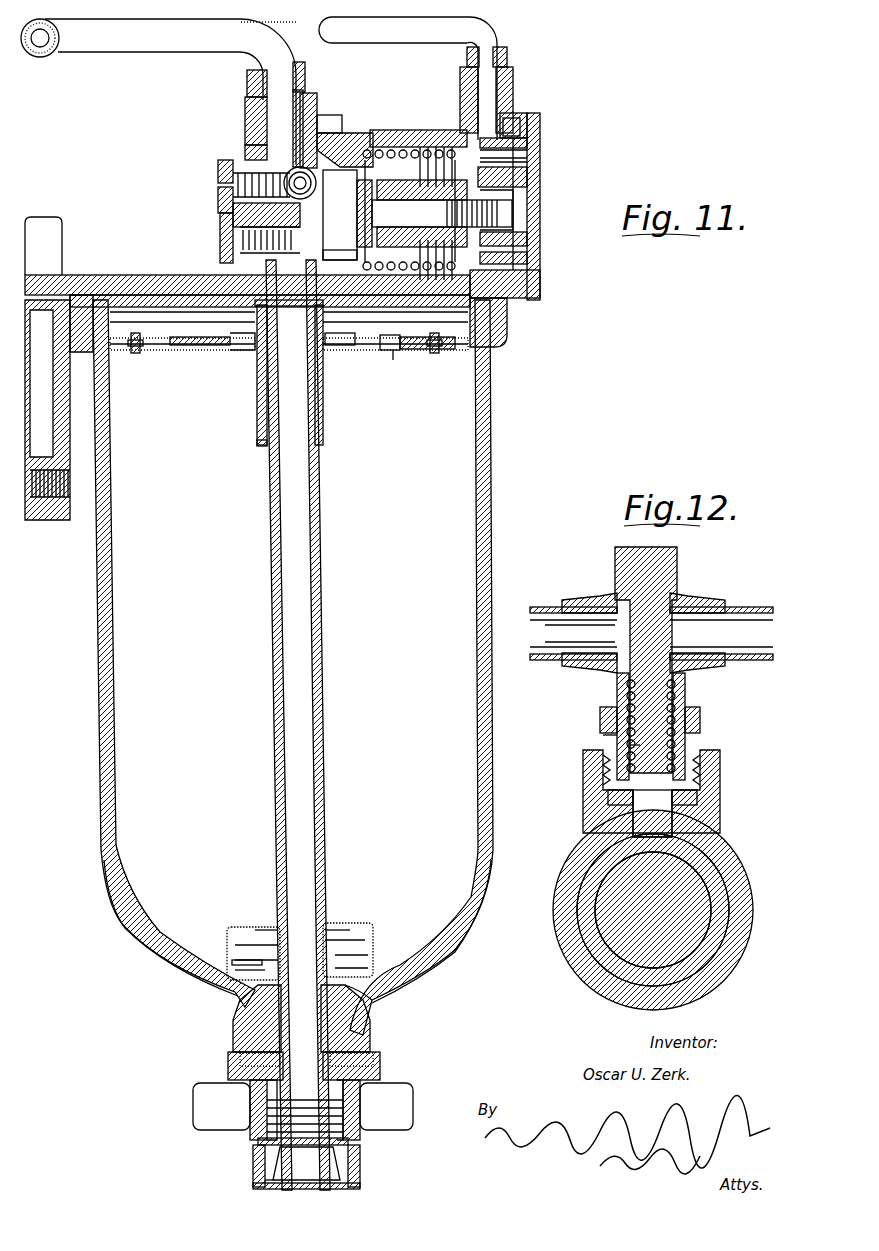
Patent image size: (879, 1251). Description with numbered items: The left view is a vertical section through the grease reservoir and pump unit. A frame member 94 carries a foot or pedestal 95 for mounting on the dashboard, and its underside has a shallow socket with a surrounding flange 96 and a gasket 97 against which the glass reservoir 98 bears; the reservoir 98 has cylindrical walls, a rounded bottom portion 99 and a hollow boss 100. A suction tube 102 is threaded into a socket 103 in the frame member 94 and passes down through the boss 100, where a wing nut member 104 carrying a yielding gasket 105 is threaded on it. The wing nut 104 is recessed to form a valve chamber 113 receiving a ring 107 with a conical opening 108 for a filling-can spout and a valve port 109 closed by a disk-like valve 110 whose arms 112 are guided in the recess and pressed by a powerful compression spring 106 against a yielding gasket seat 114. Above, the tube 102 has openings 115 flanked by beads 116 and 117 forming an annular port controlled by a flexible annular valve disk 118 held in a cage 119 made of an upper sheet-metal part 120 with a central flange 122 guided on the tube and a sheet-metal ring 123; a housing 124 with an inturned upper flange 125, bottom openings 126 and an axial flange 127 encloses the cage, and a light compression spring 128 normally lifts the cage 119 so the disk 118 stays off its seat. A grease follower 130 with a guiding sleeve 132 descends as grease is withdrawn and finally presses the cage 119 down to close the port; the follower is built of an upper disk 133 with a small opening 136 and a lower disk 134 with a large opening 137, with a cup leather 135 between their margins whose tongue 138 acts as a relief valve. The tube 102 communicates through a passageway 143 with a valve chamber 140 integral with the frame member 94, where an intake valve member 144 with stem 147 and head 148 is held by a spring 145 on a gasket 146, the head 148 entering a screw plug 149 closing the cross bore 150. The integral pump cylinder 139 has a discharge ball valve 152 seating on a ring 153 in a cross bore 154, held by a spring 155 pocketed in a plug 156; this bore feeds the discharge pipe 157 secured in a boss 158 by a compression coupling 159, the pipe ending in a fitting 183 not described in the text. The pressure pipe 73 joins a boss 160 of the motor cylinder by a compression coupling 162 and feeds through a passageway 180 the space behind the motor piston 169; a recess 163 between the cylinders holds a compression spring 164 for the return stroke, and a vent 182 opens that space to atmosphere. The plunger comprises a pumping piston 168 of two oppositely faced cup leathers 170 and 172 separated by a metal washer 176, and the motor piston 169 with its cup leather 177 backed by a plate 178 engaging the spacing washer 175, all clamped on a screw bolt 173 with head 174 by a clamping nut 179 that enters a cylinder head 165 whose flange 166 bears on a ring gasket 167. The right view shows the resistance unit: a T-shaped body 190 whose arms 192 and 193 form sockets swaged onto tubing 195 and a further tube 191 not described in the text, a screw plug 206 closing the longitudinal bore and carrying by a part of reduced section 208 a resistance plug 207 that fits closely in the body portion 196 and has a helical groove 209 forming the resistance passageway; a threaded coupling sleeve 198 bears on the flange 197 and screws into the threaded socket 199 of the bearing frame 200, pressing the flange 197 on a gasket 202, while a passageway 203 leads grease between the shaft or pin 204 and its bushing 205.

In FIG. 11, the eye ring 183 is at (70, 56).
In FIG. 11, the discharge pipe 157 is at (148, 48).
In FIG. 11, the boss 158 is at (250, 92).
In FIG. 11, the compression coupling 159 is at (294, 60).
In FIG. 11, the pressure pipe 73 is at (362, 30).
In FIG. 11, the compression coupling 162 is at (502, 50).
In FIG. 11, the boss 160 is at (515, 72).
In FIG. 11, the ring gasket 167 is at (520, 118).
In FIG. 11, the flange 166 is at (535, 120).
In FIG. 11, the passageway 180 is at (540, 140).
In FIG. 11, the cup leather 177 is at (540, 153).
In FIG. 11, the plate or washer 178 is at (545, 161).
In FIG. 11, the cylinder head 165 is at (540, 173).
In FIG. 11, the clamping nut 179 is at (540, 188).
In FIG. 11, the pumping piston 168 is at (540, 240).
In FIG. 11, the motor piston 169 is at (540, 264).
In FIG. 11, the gasket 97 is at (542, 287).
In FIG. 11, the flange 96 is at (509, 318).
In FIG. 11, the frame member 94 is at (118, 275).
In FIG. 11, the opening 136 is at (158, 290).
In FIG. 11, the foot or pedestal 95 is at (38, 230).
In FIG. 11, the glass reservoir 98 is at (95, 560).
In FIG. 11, the rounded bottom portion 99 is at (150, 945).
In FIG. 11, the openings 126 is at (430, 974).
In FIG. 11, the suction tube 102 is at (320, 586).
In FIG. 11, the cross bore 150 is at (262, 420).
In FIG. 11, the passageway 143 is at (262, 445).
In FIG. 11, the guiding sleeve 132 is at (258, 450).
In FIG. 11, the cup leather 135 is at (125, 355).
In FIG. 11, the tongue member 138 is at (155, 352).
In FIG. 11, the opening 137 is at (205, 352).
In FIG. 11, the socket 103 is at (235, 352).
In FIG. 11, the cup leather 170 is at (355, 350).
In FIG. 11, the cup leather 172 is at (400, 352).
In FIG. 11, the grease follower 130 is at (432, 360).
In FIG. 11, the metal washer 176 is at (386, 352).
In FIG. 11, the lower disk 134 is at (360, 350).
In FIG. 11, the upper disk 133 is at (394, 362).
In FIG. 11, the cross bore 154 is at (248, 122).
In FIG. 11, the valve chamber 140 is at (250, 150).
In FIG. 11, the plug 156 is at (220, 168).
In FIG. 11, the spring 155 is at (220, 196).
In FIG. 11, the stem 147 is at (232, 242).
In FIG. 11, the head 148 is at (222, 232).
In FIG. 11, the screw plug 149 is at (234, 222).
In FIG. 11, the spring 145 is at (317, 185).
In FIG. 11, the gasket 146 is at (323, 205).
In FIG. 11, the intake valve member 144 is at (358, 229).
In FIG. 11, the head 174 is at (370, 236).
In FIG. 11, the screw bolt 173 is at (450, 214).
In FIG. 11, the ball valve 152 is at (313, 130).
In FIG. 11, the valve seat 153 is at (340, 115).
In FIG. 11, the pump cylinder 139 is at (345, 145).
In FIG. 11, the vent 182 is at (385, 130).
In FIG. 11, the recess 163 is at (382, 150).
In FIG. 11, the compression spring 164 is at (400, 150).
In FIG. 11, the spacing washer 175 is at (432, 147).
In FIG. 11, the annular valve disk 118 is at (256, 925).
In FIG. 11, the flange 122 is at (272, 925).
In FIG. 11, the upper sheet-metal part 120 is at (248, 932).
In FIG. 11, the cage 119 is at (265, 940).
In FIG. 11, the sheet-metal ring 123 is at (230, 945).
In FIG. 11, the bead 116 is at (340, 936).
In FIG. 11, the bead 117 is at (356, 930).
In FIG. 11, the upper flange 125 is at (372, 922).
In FIG. 11, the housing 124 is at (372, 945).
In FIG. 11, the openings 115 is at (373, 1003).
In FIG. 11, the hollow boss 100 is at (371, 1040).
In FIG. 11, the axially extending flange 127 is at (255, 1000).
In FIG. 11, the light compression spring 128 is at (235, 980).
In FIG. 11, the wing nut member 104 is at (228, 1071).
In FIG. 11, the yielding gasket 105 is at (381, 1066).
In FIG. 11, the compression spring 106 is at (252, 1122).
In FIG. 11, the valve chamber 113 is at (265, 1105).
In FIG. 11, the disk-like valve 110 is at (349, 1141).
In FIG. 11, the arms 112 is at (257, 1150).
In FIG. 11, the ring 107 is at (358, 1160).
In FIG. 11, the conical opening 108 is at (360, 1184).
In FIG. 11, the valve port 109 is at (262, 1180).
In FIG. 11, the yielding gasket seat 114 is at (306, 1164).
In FIG. 12, the screw plug 206 is at (680, 551).
In FIG. 12, the pipe 191 is at (535, 607).
In FIG. 12, the arm 192 is at (580, 596).
In FIG. 12, the arm 193 is at (715, 606).
In FIG. 12, the tubing 195 is at (755, 608).
In FIG. 12, the part of reduced section 208 is at (640, 638).
In FIG. 12, the T-shaped body 190 is at (610, 697).
In FIG. 12, the threaded coupling sleeve 198 is at (600, 720).
In FIG. 12, the body portion 196 is at (700, 719).
In FIG. 12, the resistance plug unit 207 is at (603, 737).
In FIG. 12, the helical groove 209 is at (625, 746).
In FIG. 12, the threaded socket 199 is at (605, 772).
In FIG. 12, the flange 197 is at (722, 770).
In FIG. 12, the gasket 202 is at (698, 797).
In FIG. 12, the passageway 203 is at (675, 815).
In FIG. 12, the frame of the bearing 200 is at (565, 891).
In FIG. 12, the shaft or pin 204 is at (690, 895).
In FIG. 12, the bushing 205 is at (712, 952).